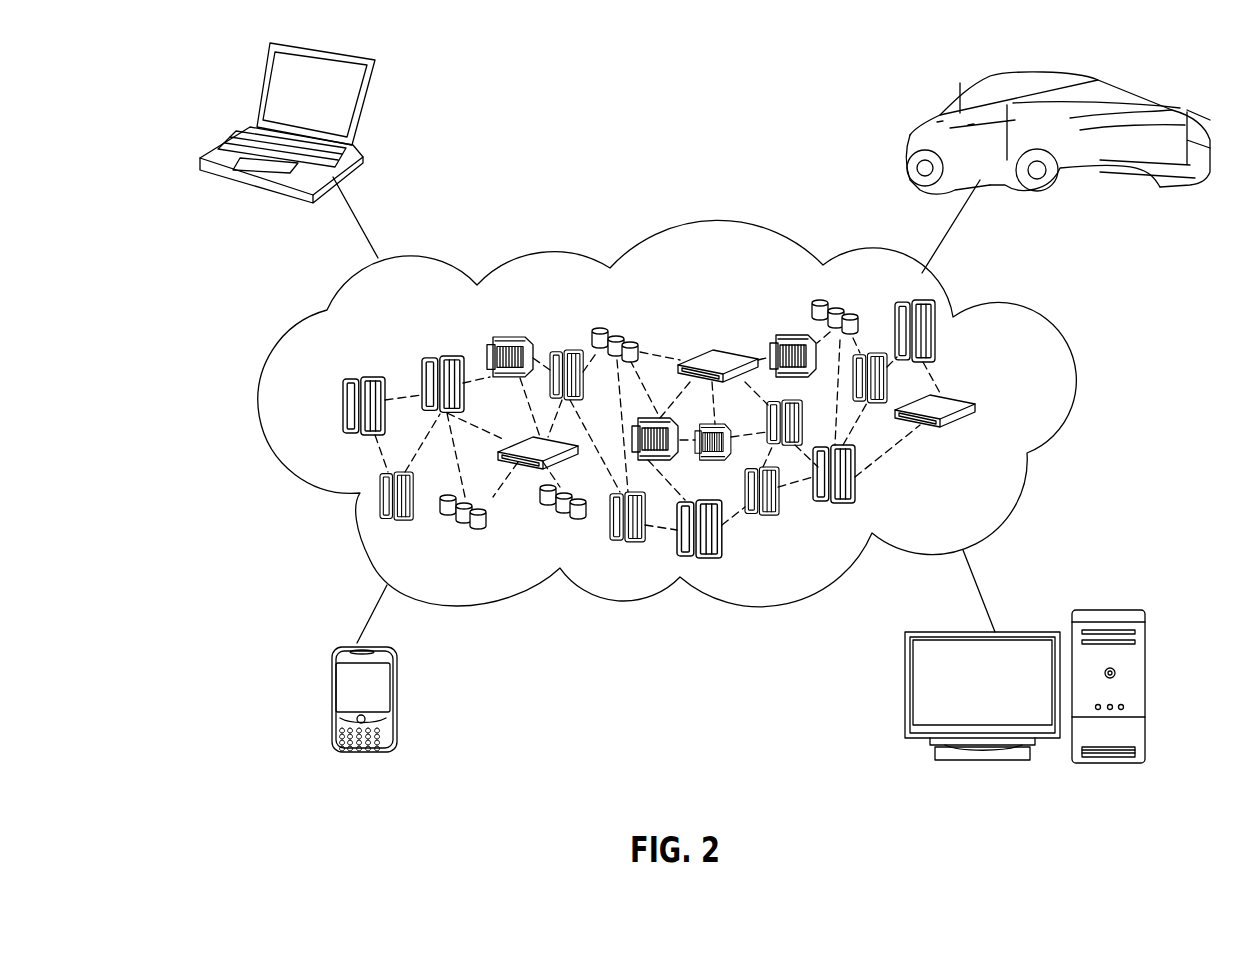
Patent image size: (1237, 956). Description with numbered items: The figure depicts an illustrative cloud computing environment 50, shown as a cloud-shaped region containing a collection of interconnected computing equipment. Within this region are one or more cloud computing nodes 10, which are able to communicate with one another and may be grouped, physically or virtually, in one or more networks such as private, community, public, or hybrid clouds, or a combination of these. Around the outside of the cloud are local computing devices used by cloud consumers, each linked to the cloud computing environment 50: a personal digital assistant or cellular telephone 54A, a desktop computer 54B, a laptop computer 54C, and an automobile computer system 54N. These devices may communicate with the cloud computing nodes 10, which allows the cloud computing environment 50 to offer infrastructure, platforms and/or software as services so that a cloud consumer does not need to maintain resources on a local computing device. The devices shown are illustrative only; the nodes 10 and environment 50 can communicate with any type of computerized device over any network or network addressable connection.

The cloud computing node 10 is at (1011, 408).
The cloud computing environment 50 is at (1038, 328).
The personal digital assistant or cellular telephone 54A is at (330, 703).
The desktop computer 54B is at (1113, 608).
The laptop computer 54C is at (367, 108).
The automobile computer system 54N is at (917, 122).